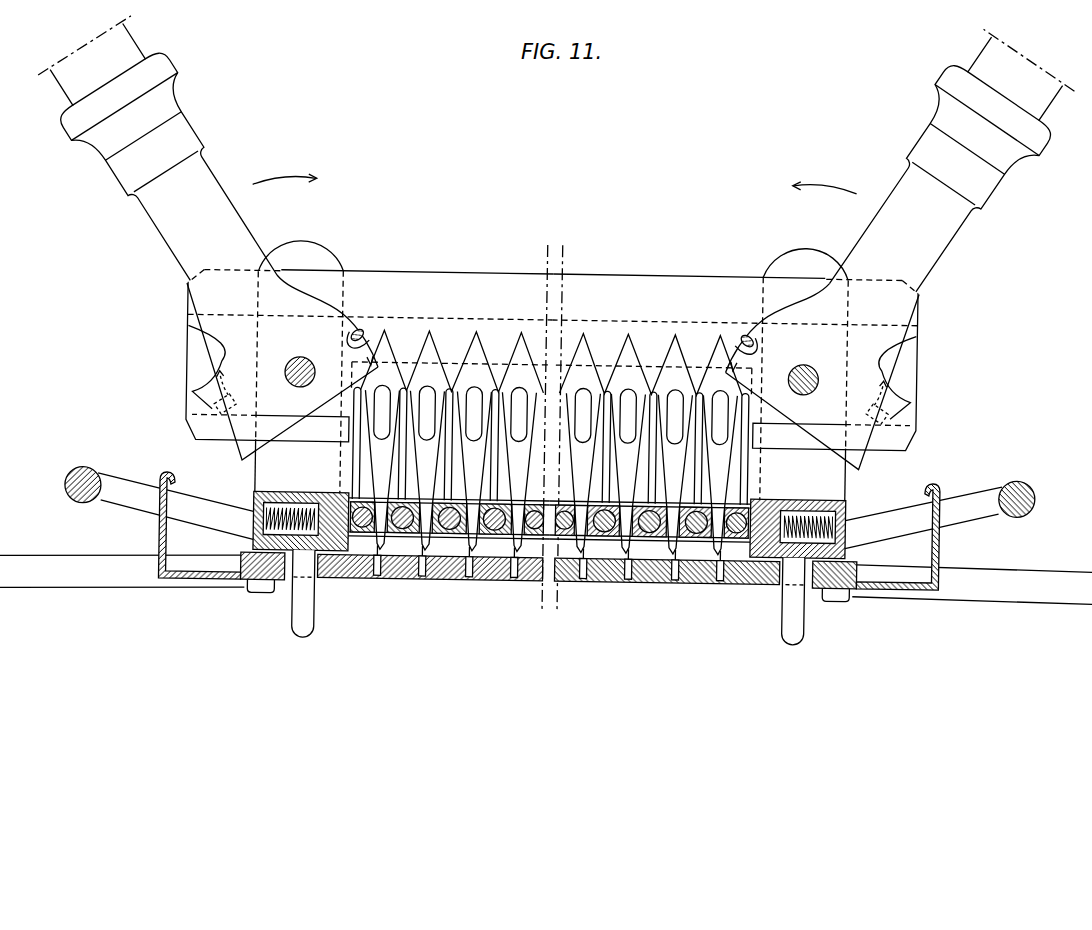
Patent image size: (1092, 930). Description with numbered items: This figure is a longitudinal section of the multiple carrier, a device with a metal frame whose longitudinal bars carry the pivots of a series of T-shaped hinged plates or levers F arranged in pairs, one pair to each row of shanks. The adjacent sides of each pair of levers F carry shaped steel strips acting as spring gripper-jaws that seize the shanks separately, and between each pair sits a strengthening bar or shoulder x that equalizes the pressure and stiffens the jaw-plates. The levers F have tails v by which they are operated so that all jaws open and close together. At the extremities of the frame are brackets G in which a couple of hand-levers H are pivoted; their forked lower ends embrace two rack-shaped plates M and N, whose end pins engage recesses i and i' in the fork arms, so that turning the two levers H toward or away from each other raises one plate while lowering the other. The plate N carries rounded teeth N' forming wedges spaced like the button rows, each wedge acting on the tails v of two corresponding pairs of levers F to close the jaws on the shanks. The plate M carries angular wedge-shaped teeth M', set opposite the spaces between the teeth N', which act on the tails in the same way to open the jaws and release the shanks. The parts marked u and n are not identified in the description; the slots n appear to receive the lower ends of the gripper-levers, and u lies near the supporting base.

The hand-lever H is at (554, 176).
The rack-shaped plate M is at (552, 333).
The angular wedge-shaped teeth M' is at (551, 363).
The rounded teeth N' is at (550, 485).
The tails v is at (555, 415).
The hinged plates or levers F is at (550, 446).
The brackets G is at (549, 542).
The rack-shaped plate N is at (543, 360).
The recess i is at (552, 373).
The recess i' is at (551, 398).
The spring bracket u is at (546, 534).
The needle slots n is at (424, 581).
The strengthening bar or shoulder x is at (549, 520).